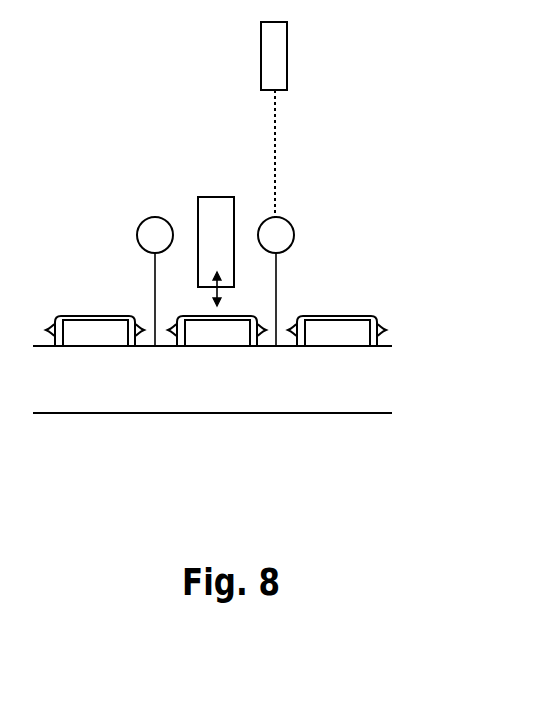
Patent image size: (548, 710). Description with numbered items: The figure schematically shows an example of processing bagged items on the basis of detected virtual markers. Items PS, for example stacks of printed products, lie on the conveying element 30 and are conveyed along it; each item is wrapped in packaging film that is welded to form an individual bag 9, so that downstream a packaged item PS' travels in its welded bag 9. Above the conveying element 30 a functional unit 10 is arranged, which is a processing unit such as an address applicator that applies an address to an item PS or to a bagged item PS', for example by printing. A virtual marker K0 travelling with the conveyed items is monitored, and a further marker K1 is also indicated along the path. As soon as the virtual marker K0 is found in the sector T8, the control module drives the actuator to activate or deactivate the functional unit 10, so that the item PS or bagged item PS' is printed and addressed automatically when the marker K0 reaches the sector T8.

The sector T8 is at (283, 58).
The functional unit 10 is at (215, 207).
The camera 1 K1 is at (146, 229).
The virtual marker K0 is at (282, 228).
The item PS is at (86, 287).
The packaged item PS' is at (366, 287).
The bag 9 is at (378, 325).
The conveying element 30 is at (355, 402).